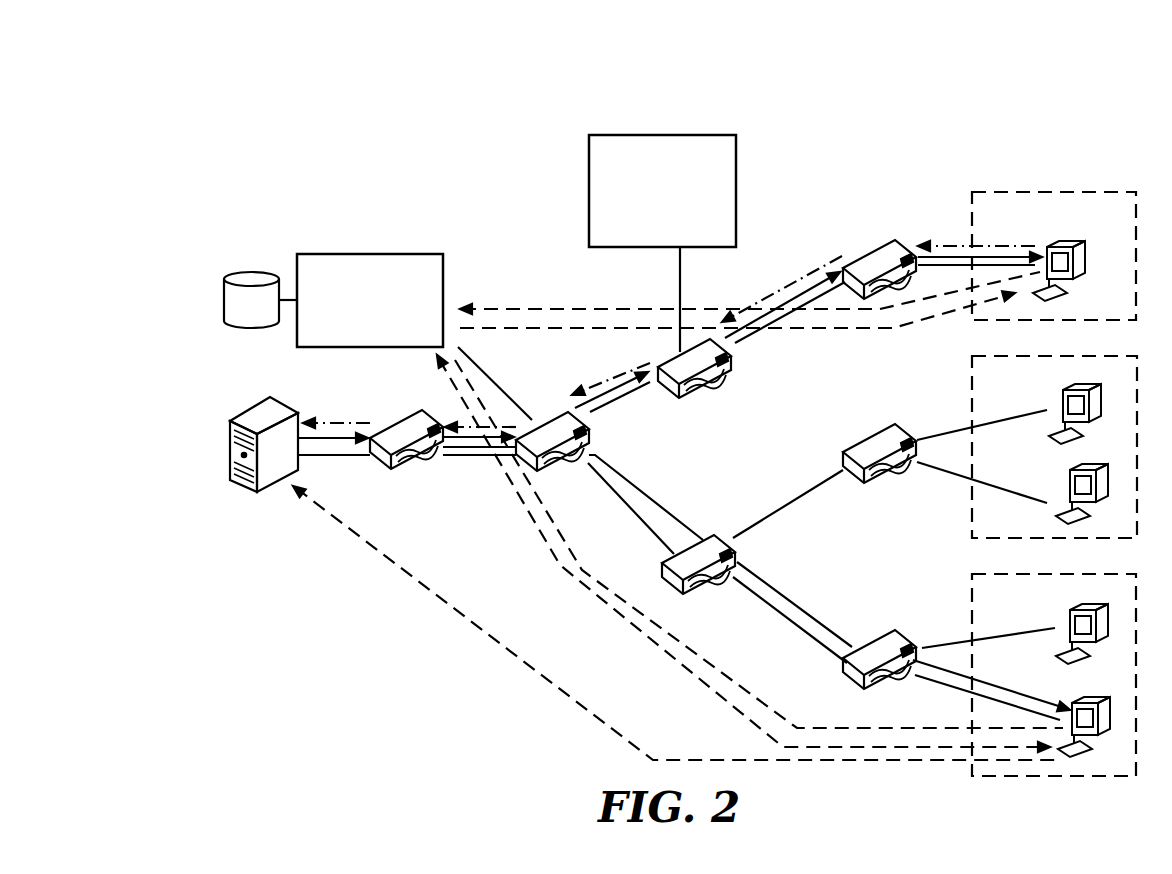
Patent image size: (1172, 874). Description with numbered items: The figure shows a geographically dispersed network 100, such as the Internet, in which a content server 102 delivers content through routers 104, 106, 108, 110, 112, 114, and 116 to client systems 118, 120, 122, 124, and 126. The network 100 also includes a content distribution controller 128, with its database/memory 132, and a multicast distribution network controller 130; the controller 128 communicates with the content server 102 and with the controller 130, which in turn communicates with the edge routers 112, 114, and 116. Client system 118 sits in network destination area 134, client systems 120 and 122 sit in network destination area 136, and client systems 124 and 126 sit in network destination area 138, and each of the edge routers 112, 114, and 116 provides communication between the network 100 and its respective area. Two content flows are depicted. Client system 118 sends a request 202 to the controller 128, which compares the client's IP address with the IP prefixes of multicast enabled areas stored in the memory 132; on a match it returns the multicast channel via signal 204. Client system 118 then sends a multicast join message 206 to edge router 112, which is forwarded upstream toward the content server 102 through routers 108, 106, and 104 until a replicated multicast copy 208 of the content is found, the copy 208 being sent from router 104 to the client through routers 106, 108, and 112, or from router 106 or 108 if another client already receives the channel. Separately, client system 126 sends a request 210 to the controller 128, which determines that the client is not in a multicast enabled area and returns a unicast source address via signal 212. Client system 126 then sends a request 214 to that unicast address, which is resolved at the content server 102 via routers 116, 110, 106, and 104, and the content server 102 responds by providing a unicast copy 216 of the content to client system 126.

The geographically dispersed network 100 is at (903, 133).
The content server 102 is at (247, 423).
The router 104 is at (393, 468).
The router 106 is at (540, 470).
The router 108 is at (683, 396).
The router 110 is at (687, 592).
The edge router 112 is at (896, 245).
The edge router 114 is at (867, 482).
The edge router 116 is at (867, 688).
The client system 118 is at (1049, 251).
The client system 120 is at (1064, 392).
The client system 122 is at (1071, 475).
The client system 124 is at (1071, 612).
The client system 126 is at (1075, 704).
The content distribution controller 128 is at (333, 253).
The multicast distribution network controller 130 is at (627, 135).
The database/memory 132 is at (252, 272).
The network destination area 134 is at (990, 192).
The network destination area 136 is at (1007, 356).
The network destination area 138 is at (1005, 574).
The request 202 is at (548, 302).
The signal 204 is at (783, 326).
The multicast join message 206 is at (625, 395).
The replicated multicast copy 208 is at (593, 408).
The request 210 is at (722, 678).
The signal 212 is at (690, 673).
The request 214 is at (555, 688).
The unicast copy 216 is at (770, 585).